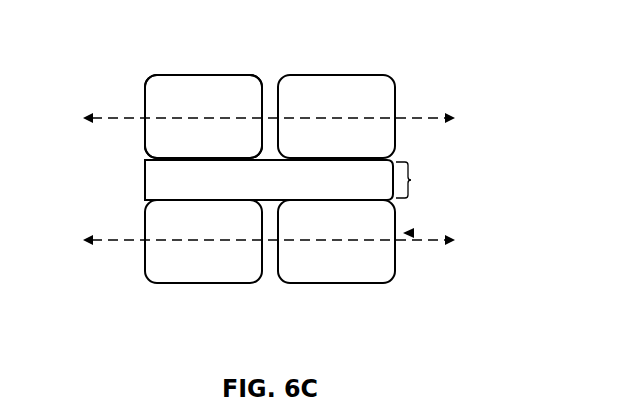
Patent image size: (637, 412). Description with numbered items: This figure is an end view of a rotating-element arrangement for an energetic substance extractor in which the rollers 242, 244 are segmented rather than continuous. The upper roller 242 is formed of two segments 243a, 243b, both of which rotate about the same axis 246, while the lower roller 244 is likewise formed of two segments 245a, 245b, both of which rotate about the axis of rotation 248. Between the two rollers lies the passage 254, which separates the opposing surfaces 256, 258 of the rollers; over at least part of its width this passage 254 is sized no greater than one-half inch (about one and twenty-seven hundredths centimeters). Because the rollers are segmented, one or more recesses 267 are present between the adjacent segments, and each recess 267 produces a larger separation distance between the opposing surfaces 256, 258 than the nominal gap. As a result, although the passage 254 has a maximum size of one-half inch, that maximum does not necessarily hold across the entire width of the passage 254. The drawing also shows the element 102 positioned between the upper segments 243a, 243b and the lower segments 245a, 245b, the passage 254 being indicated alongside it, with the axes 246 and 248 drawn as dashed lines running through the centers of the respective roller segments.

The substrate 102 is at (160, 180).
The roller 242 is at (148, 77).
The segment 243a is at (202, 84).
The segment 243b is at (342, 87).
The roller 244 is at (410, 232).
The segment 245a is at (203, 271).
The segment 245b is at (347, 272).
The axis 246 is at (422, 118).
The axis of rotation 248 is at (110, 243).
The passage 254 is at (414, 180).
The opposing surface 256 is at (183, 200).
The opposing surface 258 is at (158, 162).
The recess 267 is at (271, 92).